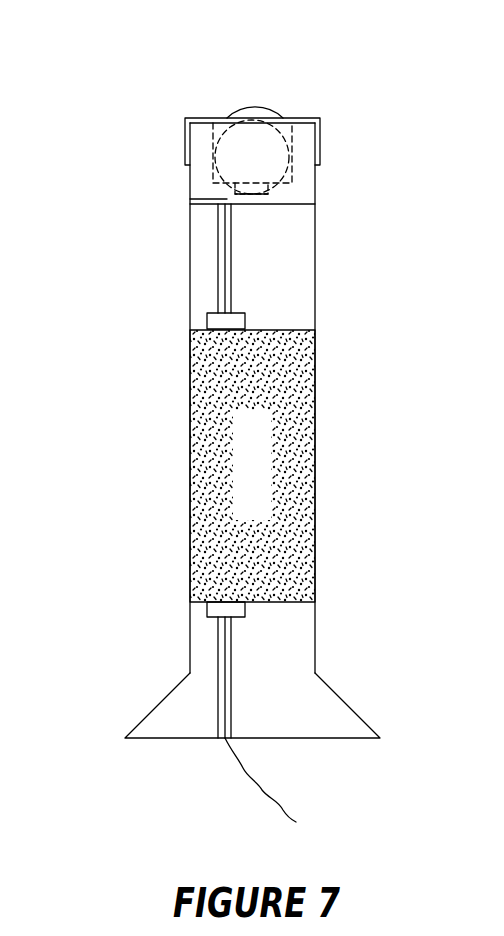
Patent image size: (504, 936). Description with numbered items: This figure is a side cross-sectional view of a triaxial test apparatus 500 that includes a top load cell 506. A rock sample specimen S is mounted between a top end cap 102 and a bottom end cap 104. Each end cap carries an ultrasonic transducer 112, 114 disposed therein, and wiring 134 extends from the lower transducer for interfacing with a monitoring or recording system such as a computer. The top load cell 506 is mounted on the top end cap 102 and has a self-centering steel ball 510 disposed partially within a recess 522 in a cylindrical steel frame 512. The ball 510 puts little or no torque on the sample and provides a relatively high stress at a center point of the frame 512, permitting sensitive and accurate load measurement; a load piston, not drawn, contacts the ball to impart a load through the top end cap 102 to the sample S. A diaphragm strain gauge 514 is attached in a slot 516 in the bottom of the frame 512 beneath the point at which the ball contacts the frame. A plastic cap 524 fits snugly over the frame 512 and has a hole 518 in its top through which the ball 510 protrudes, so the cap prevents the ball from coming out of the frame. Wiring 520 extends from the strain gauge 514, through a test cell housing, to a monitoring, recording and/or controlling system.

The triaxial test apparatus 500 is at (189, 260).
The self-centering steel ball 510 is at (252, 107).
The hole 518 is at (289, 122).
The cap 524 is at (184, 123).
The recess 522 is at (282, 147).
The wiring 520 is at (235, 197).
The diaphragm strain gauge 514 is at (267, 193).
The cylindrical steel frame 512 is at (306, 192).
The top load cell 506 is at (189, 200).
The slot 516 is at (255, 205).
The top end cap 102 is at (298, 300).
The ultrasonic transducer 112 is at (207, 321).
The sample specimen S is at (300, 460).
The ultrasonic transducer 114 is at (207, 612).
The bottom end cap 104 is at (187, 708).
The wiring 134 is at (263, 790).